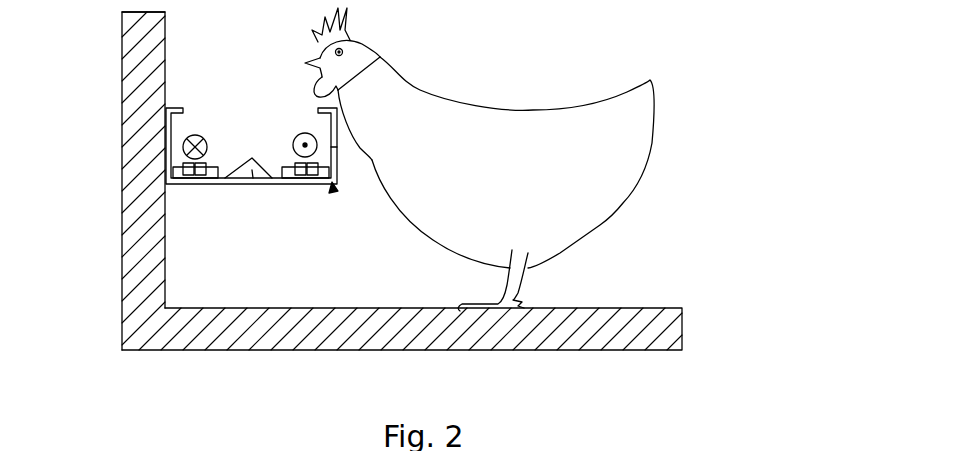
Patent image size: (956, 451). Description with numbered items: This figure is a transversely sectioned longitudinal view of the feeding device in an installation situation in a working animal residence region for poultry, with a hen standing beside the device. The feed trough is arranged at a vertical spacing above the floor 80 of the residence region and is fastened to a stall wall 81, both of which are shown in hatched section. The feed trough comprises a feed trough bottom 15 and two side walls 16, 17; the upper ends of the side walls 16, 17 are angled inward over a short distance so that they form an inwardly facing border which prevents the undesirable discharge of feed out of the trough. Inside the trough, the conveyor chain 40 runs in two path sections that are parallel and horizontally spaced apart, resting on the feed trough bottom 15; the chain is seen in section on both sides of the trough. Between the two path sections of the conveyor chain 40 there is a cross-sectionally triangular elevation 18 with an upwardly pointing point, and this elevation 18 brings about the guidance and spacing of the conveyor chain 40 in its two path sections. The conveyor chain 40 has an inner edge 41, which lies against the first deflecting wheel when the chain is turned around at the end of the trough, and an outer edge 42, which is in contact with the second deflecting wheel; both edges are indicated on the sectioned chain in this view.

The feed trough bottom 15 is at (217, 186).
The side wall 16 is at (163, 162).
The side wall 17 is at (335, 148).
The elevation 18 is at (252, 172).
The conveyor chain 40 is at (197, 180).
The inner edge 41 is at (229, 164).
The outer edge 42 is at (333, 190).
The floor 80 is at (237, 312).
The stall wall 81 is at (163, 83).